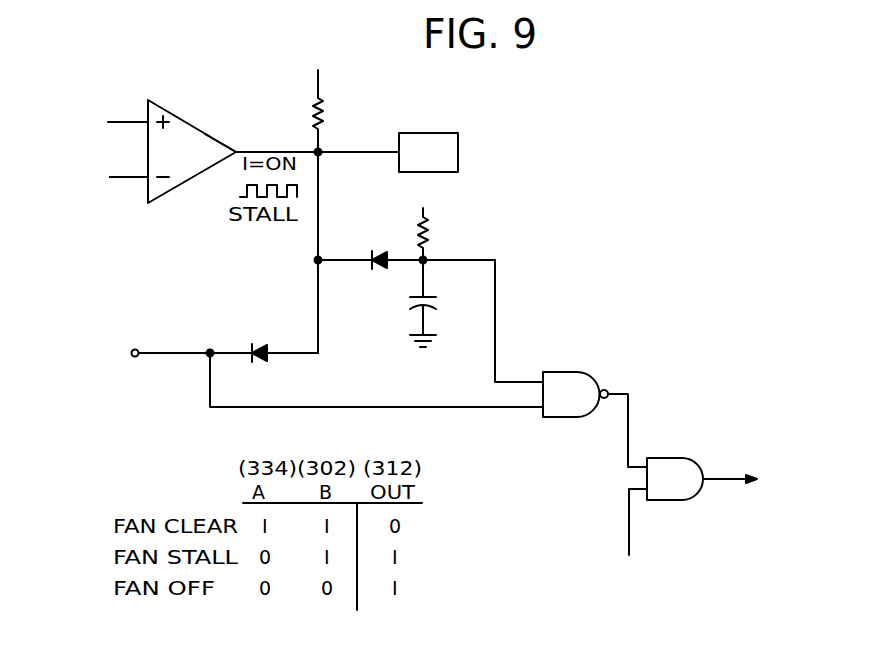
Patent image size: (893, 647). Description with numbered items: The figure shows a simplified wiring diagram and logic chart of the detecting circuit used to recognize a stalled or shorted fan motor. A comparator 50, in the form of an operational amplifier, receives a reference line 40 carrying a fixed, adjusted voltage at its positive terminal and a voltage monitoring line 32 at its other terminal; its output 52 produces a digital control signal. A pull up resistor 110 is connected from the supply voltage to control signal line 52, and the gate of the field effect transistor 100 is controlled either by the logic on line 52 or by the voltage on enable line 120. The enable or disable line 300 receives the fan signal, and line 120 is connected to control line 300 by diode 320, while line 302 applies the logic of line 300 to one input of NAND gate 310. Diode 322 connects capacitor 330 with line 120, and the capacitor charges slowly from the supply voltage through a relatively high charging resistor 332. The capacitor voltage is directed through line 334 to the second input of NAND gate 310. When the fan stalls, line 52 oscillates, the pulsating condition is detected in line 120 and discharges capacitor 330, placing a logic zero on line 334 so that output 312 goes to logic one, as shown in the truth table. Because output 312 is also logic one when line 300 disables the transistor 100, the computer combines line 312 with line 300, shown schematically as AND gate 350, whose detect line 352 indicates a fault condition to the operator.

The reference line 40 is at (127, 122).
The voltage monitoring line 32 is at (128, 178).
The comparator 50 is at (207, 142).
The output 52 is at (272, 152).
The pull up resistor 110 is at (320, 107).
The FET 100 is at (458, 139).
The enable line 120 is at (320, 210).
The charging resistor 332 is at (427, 233).
The diode 322 is at (380, 268).
The capacitor 330 is at (430, 307).
The line 334 is at (495, 347).
The NAND gate 310 is at (578, 383).
The output 312 is at (628, 440).
The AND gate 350 is at (683, 466).
The detect line 352 is at (706, 481).
The control line 300 is at (166, 355).
The diode 320 is at (262, 344).
The line 302 is at (450, 407).